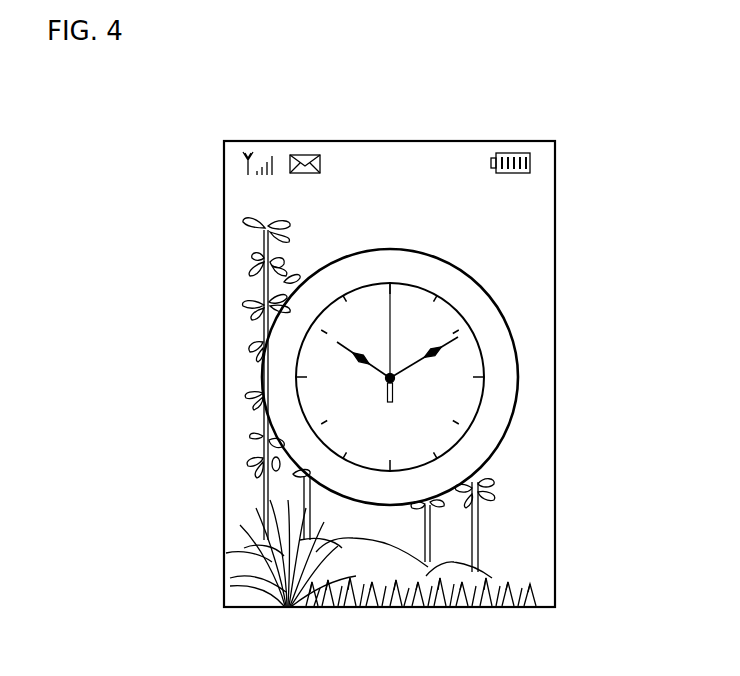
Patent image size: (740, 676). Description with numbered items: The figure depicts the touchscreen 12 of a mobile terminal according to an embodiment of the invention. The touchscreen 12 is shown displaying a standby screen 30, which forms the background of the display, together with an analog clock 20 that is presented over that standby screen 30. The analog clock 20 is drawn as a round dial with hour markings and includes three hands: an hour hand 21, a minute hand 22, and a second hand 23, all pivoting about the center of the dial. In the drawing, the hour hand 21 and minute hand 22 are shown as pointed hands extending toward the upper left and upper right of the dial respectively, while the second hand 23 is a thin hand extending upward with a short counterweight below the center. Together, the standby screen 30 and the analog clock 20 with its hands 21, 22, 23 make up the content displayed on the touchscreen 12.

The touchscreen 12 is at (556, 240).
The analog clock 20 is at (512, 422).
The hour hand 21 is at (357, 355).
The minute hand 22 is at (421, 360).
The second hand 23 is at (392, 323).
The standby screen 30 is at (538, 488).